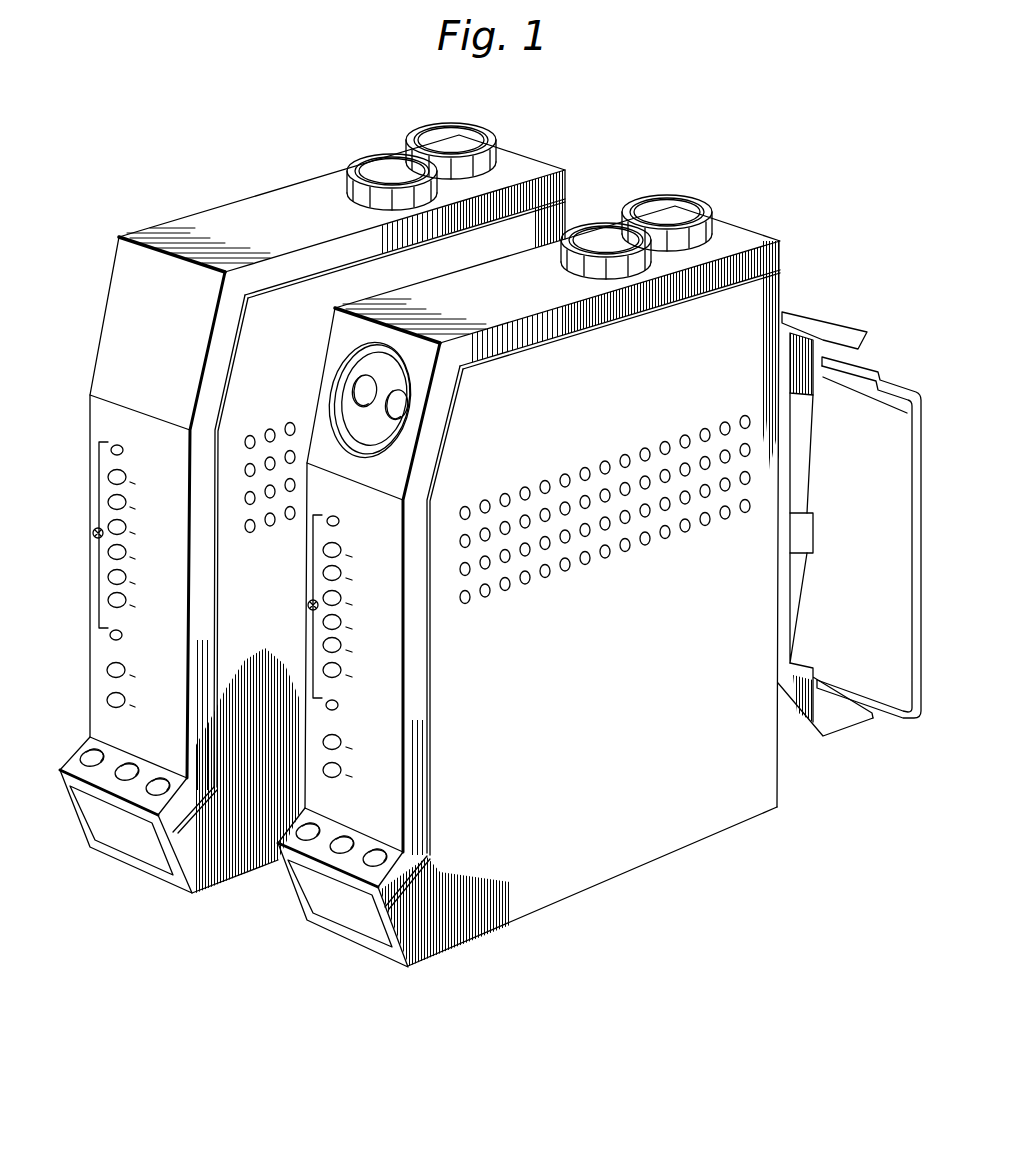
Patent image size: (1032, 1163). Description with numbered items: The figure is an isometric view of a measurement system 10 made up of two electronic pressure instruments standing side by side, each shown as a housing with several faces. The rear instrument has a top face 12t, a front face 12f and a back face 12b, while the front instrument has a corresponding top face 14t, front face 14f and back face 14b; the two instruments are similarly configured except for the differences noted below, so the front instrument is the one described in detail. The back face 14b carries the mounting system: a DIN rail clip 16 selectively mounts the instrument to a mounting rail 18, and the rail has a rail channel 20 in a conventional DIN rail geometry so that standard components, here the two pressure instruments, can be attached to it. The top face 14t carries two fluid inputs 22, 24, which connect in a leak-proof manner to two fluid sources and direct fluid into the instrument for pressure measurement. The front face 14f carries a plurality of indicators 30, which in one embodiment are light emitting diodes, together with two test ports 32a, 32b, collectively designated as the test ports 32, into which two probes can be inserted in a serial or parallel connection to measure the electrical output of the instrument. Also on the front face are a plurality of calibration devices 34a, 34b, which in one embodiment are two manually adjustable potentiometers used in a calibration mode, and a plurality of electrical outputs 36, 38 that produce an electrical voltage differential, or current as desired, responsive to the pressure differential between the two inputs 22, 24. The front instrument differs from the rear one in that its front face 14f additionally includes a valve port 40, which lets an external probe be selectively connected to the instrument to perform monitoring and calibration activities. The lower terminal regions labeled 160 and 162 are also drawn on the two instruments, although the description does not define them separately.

The measurement system 10 is at (168, 182).
The top face 12t is at (252, 206).
The front face 12f is at (122, 270).
The back face 12b is at (570, 210).
The top face 14t is at (487, 318).
The front face 14f is at (392, 510).
The back face 14b is at (783, 294).
The DIN rail clip 16 is at (802, 580).
The mounting rail 18 is at (865, 367).
The rail channel 20 is at (879, 654).
The fluid input 22 is at (582, 264).
The fluid input 24 is at (708, 217).
The indicators 30 is at (398, 688).
The test ports 32 is at (313, 573).
The test port 32a is at (342, 520).
The test port 32b is at (340, 707).
The calibration device 34a is at (323, 740).
The calibration device 34b is at (323, 770).
The electrical output 36 is at (335, 912).
The electrical output 38 is at (372, 840).
The valve port 40 is at (365, 368).
The terminal block of first housing 160 is at (140, 876).
The terminal block of second housing 162 is at (372, 953).